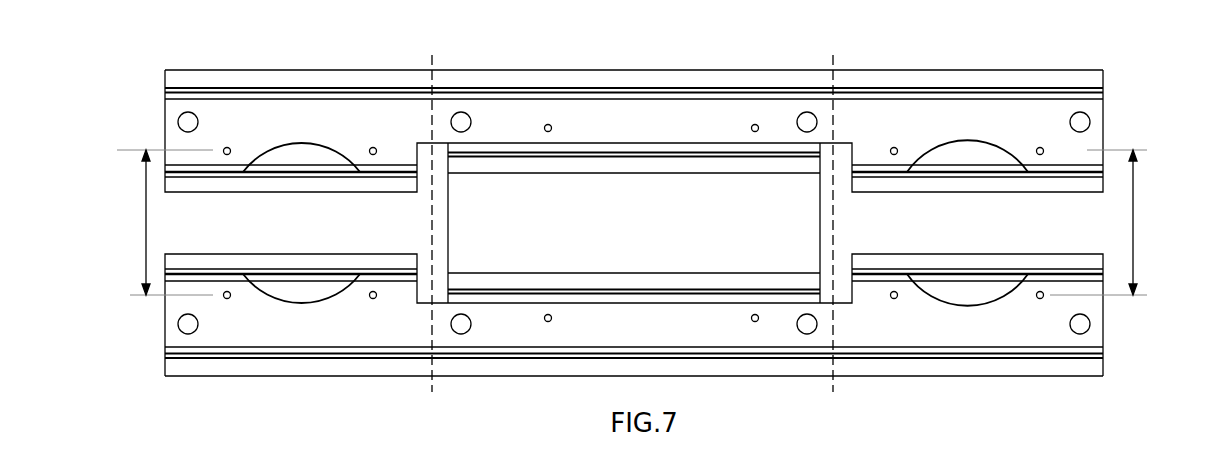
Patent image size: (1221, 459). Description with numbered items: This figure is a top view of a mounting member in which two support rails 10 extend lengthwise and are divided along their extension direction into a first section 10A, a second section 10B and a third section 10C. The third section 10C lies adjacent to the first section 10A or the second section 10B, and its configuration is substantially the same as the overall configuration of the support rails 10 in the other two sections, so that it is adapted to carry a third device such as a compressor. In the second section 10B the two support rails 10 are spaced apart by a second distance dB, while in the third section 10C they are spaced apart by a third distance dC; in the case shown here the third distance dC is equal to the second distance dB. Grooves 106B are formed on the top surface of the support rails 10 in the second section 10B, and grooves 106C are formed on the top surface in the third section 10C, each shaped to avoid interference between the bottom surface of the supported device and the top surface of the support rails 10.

The support rails 10 is at (678, 203).
The first section 10A is at (435, 52).
The second section 10B is at (430, 52).
The third section 10C is at (968, 195).
The grooves 106B is at (287, 158).
The grooves 106C is at (952, 158).
The second distance dB is at (165, 222).
The third distance dC is at (1098, 222).